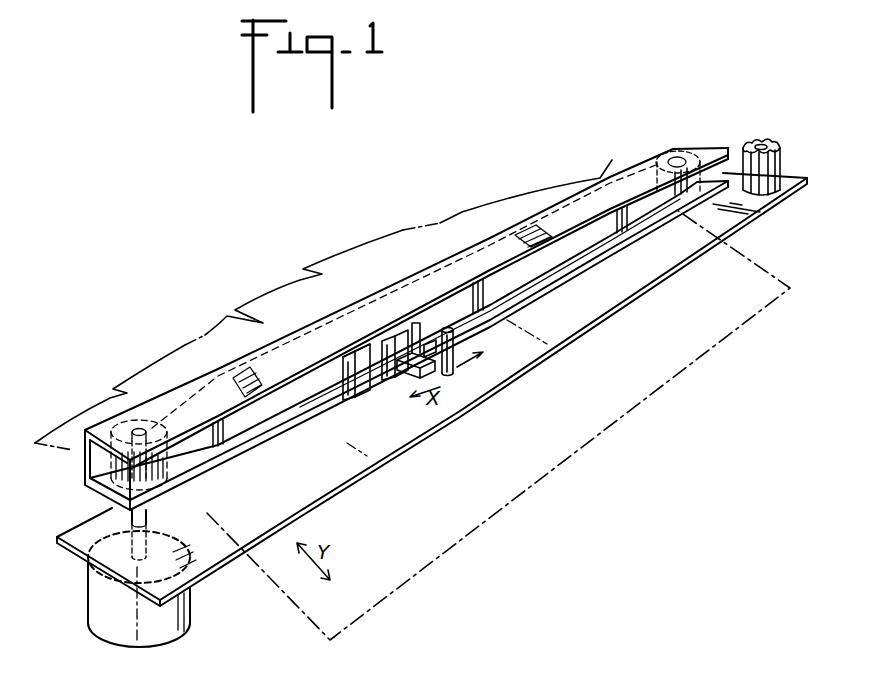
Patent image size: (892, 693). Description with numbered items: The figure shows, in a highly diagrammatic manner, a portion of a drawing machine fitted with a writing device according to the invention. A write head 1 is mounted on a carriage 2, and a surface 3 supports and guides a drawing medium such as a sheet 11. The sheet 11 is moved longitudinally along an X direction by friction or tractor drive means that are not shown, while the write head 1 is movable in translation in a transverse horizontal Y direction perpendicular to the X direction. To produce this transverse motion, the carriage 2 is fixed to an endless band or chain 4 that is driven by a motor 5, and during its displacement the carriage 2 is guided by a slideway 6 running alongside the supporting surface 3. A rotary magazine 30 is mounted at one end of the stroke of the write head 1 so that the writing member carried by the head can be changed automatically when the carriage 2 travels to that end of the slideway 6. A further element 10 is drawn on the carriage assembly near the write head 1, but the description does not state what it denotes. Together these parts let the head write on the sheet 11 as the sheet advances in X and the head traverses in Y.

The write head 1 is at (449, 376).
The carriage 2 is at (358, 386).
The surface 3 is at (213, 547).
The endless band or chain 4 is at (597, 243).
The motor 5 is at (158, 625).
The slideway 6 is at (312, 388).
The scanning element 10 is at (433, 330).
The sheet 11 is at (557, 447).
The rotary magazine 30 is at (760, 142).